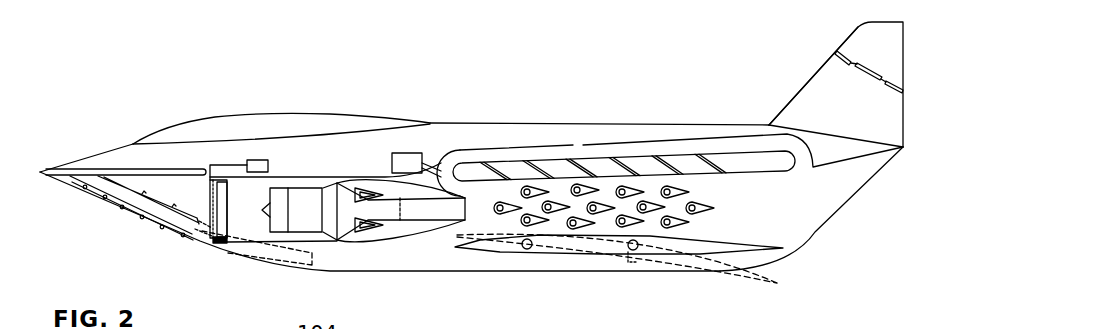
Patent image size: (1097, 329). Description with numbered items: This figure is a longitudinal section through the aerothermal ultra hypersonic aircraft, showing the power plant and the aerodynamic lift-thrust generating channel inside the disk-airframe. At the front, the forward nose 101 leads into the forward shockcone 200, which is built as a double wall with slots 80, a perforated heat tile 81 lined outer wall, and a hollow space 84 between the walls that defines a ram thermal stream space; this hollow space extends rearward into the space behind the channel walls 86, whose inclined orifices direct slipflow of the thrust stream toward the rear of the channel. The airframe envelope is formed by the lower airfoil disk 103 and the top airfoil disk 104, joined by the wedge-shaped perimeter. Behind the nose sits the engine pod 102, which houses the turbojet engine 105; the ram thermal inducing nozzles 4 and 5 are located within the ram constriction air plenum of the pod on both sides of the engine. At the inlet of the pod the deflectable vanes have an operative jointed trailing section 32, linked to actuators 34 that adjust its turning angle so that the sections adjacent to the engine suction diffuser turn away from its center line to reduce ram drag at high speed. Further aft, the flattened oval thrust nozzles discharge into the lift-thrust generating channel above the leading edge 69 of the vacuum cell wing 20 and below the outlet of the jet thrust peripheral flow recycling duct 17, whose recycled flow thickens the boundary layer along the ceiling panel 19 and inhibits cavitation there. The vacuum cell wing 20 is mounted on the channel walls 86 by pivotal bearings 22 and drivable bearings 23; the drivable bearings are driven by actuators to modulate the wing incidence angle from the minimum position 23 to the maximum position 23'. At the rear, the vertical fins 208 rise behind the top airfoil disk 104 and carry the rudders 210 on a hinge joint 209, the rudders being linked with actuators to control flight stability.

The forward nose 101 is at (42, 165).
The engine pod 102 is at (133, 163).
The perforated heat tile 81 is at (87, 187).
The forward shockcone 200 is at (130, 213).
The slots 80 is at (163, 227).
The hollow space 84 is at (182, 232).
The trailing section of vane 32 is at (223, 222).
The actuators 34 is at (268, 165).
The ram thermal inducing nozzle 4 is at (325, 190).
The ram thermal inducing nozzle 5 is at (347, 183).
The turbojet engine 105 is at (292, 210).
The lower airfoil disk 103 is at (395, 272).
The leading edge 69 is at (453, 253).
The pivotal bearings 22 is at (528, 250).
The drivable bearings 23 is at (659, 275).
The maximum position of drivable bearings 23' is at (617, 280).
The top airfoil disk 104 is at (502, 122).
The jet thrust peripheral flow recycling duct 17 is at (605, 153).
The ceiling panel 19 is at (730, 175).
The vacuum cell wing 20 is at (713, 238).
The channel walls 86 is at (823, 205).
The vertical fins 208 is at (812, 82).
The hinge joint 209 is at (887, 92).
The rudders 210 is at (860, 42).